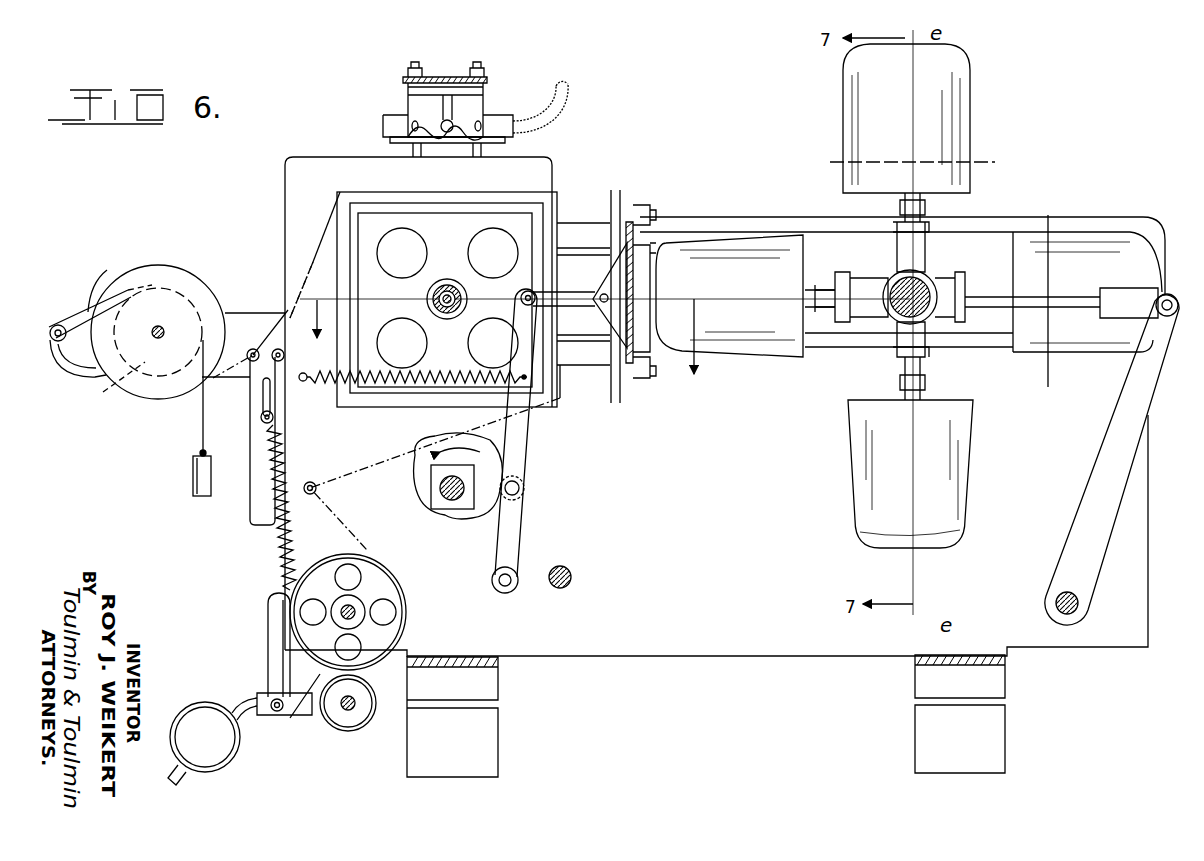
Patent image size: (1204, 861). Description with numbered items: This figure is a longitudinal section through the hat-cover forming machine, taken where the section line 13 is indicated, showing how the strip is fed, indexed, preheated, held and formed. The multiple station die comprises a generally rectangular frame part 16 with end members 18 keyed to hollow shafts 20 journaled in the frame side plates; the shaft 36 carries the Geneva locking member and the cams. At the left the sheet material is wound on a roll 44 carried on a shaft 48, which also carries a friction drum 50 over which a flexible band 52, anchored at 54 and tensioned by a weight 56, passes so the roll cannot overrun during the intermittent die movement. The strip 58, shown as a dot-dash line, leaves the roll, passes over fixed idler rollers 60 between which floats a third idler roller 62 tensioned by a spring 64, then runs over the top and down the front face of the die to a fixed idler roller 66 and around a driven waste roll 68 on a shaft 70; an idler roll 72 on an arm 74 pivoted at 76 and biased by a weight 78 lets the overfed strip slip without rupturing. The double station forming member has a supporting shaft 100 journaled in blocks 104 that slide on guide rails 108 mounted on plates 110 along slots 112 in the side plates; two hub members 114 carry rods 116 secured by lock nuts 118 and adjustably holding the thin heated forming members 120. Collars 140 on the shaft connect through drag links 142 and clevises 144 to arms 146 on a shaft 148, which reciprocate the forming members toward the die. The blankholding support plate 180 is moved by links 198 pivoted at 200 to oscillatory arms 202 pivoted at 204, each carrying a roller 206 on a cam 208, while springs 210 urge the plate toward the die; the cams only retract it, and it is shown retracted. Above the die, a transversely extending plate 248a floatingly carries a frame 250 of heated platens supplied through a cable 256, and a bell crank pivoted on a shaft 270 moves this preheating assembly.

The section line 13 is at (508, 347).
The rectangular frame part 16 is at (555, 200).
The end members 18 is at (525, 215).
The hollow shafts 20 is at (450, 280).
The shaft 36 is at (455, 505).
The roll 44 is at (182, 272).
The shaft 48 is at (162, 337).
The friction drum 50 is at (112, 390).
The flexible band 52 is at (106, 284).
The anchor 54 is at (58, 324).
The weight 56 is at (193, 478).
The strip of material 58 is at (297, 277).
The fixed idler rollers 60 is at (276, 349).
The third idler roller 62 is at (262, 415).
The spring 64 is at (275, 548).
The fixed idler roller 66 is at (317, 488).
The driven waste roll 68 is at (402, 580).
The shaft 70 is at (356, 609).
The idler roll 72 is at (348, 712).
The arm 74 is at (310, 708).
The pivot 76 is at (276, 712).
The weight 78 is at (213, 727).
The supporting shaft 100 is at (930, 320).
The blocks 104 is at (1010, 335).
The guide rails 108 is at (790, 358).
The plates 110 is at (568, 350).
The slots 112 is at (608, 375).
The hub members 114 is at (950, 278).
The rods 116 is at (926, 210).
The lock nuts 118 is at (890, 238).
The forming members 120 is at (735, 365).
The collars 140 is at (852, 342).
The drag links 142 is at (1070, 300).
The clevises 144 is at (1160, 298).
The arms 146 is at (1120, 432).
The shaft 148 is at (1080, 603).
The support plate 180 is at (640, 247).
The link 198 is at (572, 252).
The pivotal connection 200 is at (521, 297).
The oscillatory arm 202 is at (525, 458).
The pivot 204 is at (518, 590).
The roller 206 is at (523, 487).
The cam 208 is at (430, 455).
The springs 210 is at (345, 388).
The transversely extending plate 248a is at (490, 80).
The frame 250 is at (485, 96).
The cable 256 is at (570, 95).
The shaft 270 is at (572, 578).